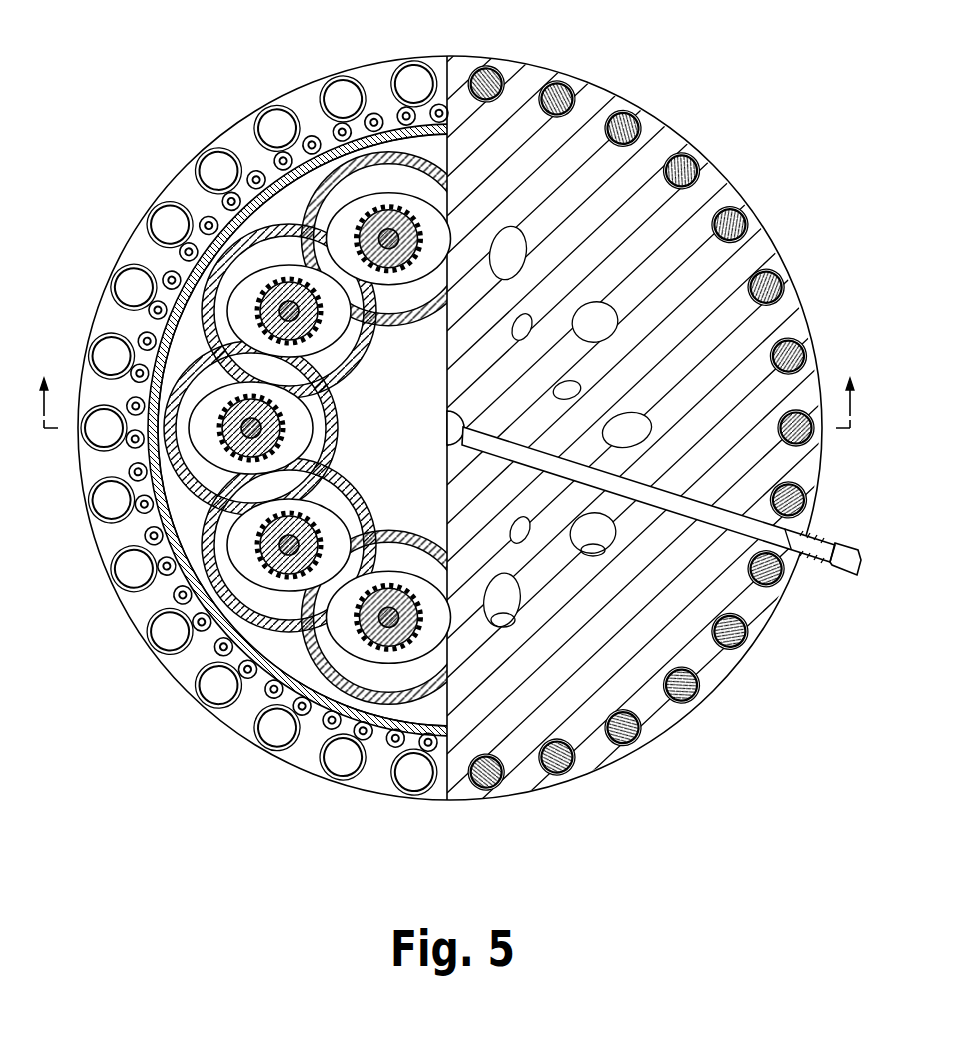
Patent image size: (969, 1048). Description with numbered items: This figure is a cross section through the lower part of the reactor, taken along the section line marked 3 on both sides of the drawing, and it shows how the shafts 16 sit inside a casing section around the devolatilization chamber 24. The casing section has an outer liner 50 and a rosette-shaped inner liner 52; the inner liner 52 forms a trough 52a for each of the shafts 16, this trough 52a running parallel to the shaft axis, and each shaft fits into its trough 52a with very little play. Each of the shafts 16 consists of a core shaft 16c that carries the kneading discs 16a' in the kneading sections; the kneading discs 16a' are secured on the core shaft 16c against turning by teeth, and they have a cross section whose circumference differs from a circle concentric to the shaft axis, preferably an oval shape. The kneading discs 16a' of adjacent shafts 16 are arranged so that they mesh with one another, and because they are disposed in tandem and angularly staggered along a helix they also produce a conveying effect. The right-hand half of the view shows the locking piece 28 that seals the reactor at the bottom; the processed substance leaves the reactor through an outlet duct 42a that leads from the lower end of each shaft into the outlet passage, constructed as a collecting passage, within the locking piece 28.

The locking piece 28 is at (745, 258).
The outer liner 50 is at (152, 555).
The outlet duct 42a is at (503, 623).
The inner liner 52 is at (353, 693).
The trough 52a is at (222, 298).
The devolatilization chamber 24 is at (288, 455).
The kneading discs 16a' is at (288, 455).
The shafts 16 is at (356, 368).
The core shaft 16c is at (297, 530).
The section line 3- 3 is at (448, 415).